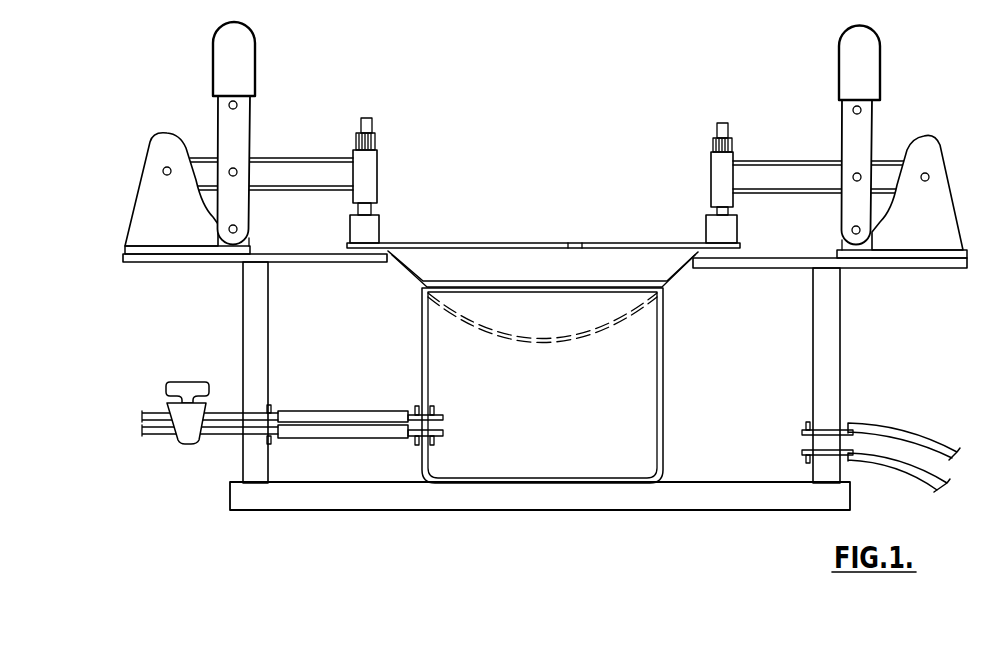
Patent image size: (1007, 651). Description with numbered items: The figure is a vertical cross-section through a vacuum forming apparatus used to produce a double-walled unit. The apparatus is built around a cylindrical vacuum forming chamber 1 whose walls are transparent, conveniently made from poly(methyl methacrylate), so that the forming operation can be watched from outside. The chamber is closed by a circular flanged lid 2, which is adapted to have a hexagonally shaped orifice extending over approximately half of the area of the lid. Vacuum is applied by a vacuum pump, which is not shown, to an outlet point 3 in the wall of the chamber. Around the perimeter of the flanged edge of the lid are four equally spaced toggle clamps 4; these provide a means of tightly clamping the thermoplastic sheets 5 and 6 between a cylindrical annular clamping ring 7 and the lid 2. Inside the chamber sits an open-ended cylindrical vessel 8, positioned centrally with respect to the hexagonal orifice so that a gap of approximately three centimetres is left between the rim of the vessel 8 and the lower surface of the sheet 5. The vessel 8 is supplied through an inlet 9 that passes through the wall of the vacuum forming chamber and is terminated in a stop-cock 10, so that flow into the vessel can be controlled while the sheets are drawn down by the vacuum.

The vacuum forming chamber 1 is at (250, 319).
The flanged lid 2 is at (123, 256).
The outlet point 3 is at (858, 433).
The toggle clamps 4 is at (156, 133).
The thermoplastic sheet 5 is at (679, 273).
The thermoplastic sheet 6 is at (587, 248).
The annular clamping ring 7 is at (378, 228).
The open-ended cylindrical vessel 8 is at (422, 360).
The inlet 9 is at (418, 440).
The stop-cock 10 is at (183, 433).